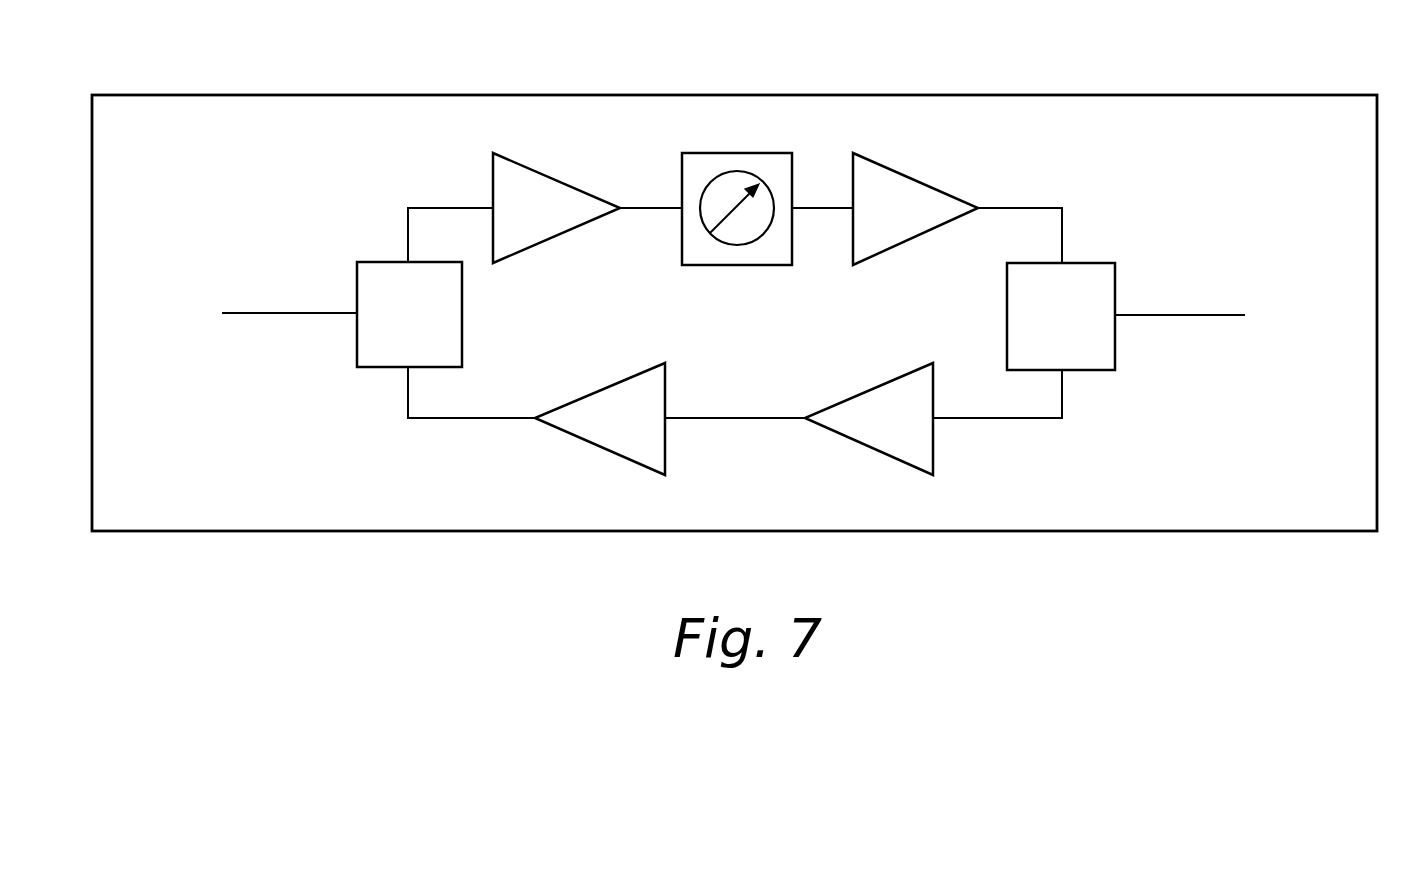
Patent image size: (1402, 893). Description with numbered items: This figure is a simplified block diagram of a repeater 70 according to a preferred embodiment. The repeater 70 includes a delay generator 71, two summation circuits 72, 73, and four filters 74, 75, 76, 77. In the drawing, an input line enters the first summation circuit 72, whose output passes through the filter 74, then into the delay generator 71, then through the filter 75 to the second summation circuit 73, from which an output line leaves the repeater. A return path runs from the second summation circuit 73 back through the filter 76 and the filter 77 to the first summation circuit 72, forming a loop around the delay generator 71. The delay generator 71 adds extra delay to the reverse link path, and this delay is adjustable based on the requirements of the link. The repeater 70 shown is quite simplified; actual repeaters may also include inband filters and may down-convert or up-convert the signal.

The repeater 70 is at (1248, 95).
The delay generator 71 is at (758, 268).
The summation circuit 72 is at (359, 258).
The summation circuit 73 is at (1100, 258).
The filter 74 is at (535, 247).
The filter 75 is at (893, 250).
The filter 76 is at (858, 443).
The filter 77 is at (590, 443).